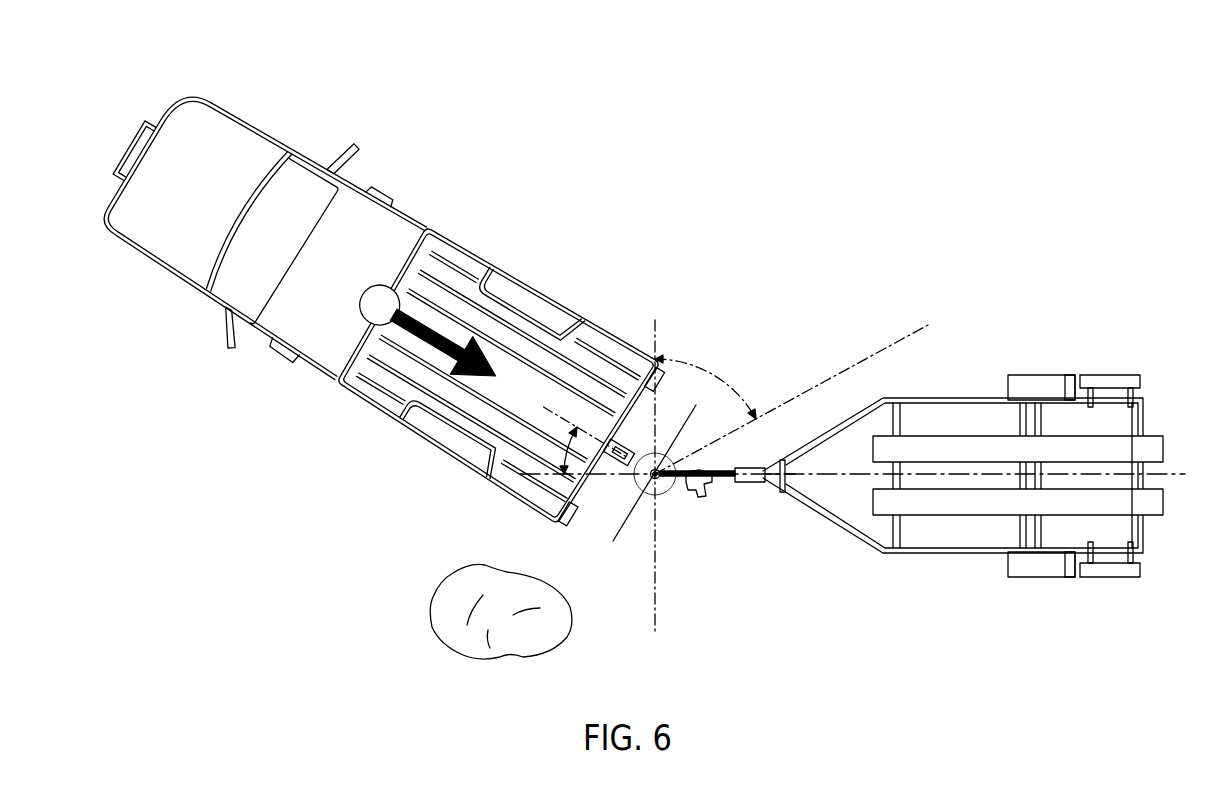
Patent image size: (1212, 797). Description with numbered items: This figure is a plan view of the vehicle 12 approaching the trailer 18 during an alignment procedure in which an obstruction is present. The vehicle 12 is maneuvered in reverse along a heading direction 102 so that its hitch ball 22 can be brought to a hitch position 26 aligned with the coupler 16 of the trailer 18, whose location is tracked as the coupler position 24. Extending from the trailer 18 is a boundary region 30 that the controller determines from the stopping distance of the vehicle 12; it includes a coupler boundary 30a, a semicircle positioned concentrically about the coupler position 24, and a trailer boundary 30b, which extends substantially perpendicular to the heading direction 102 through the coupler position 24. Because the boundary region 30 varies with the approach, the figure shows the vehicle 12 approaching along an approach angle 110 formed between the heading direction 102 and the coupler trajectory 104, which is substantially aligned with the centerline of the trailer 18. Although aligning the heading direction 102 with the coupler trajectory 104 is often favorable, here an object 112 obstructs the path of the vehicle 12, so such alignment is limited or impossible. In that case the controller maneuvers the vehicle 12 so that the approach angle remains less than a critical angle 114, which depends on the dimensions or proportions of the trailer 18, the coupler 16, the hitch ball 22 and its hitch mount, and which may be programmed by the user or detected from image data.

The vehicle 12 is at (203, 117).
The coupler 16 is at (710, 520).
The trailer 18 is at (1027, 560).
The hitch ball 22 is at (583, 360).
The coupler position 24 is at (658, 488).
The hitch position 26 is at (623, 443).
The boundary region 30 is at (606, 532).
The coupler boundary 30a is at (633, 483).
The trailer boundary 30b is at (623, 535).
The heading direction 102 is at (449, 335).
The coupler trajectory 104 is at (815, 470).
The approach angle 110 is at (551, 450).
The object 112 is at (450, 617).
The critical angle 114 is at (705, 381).